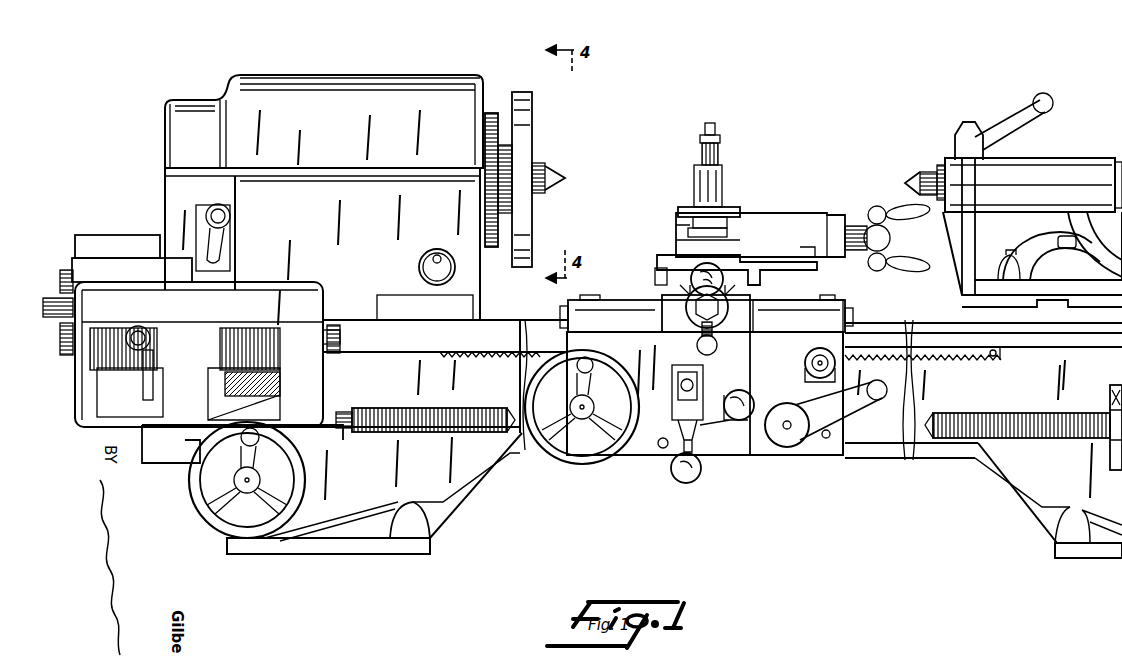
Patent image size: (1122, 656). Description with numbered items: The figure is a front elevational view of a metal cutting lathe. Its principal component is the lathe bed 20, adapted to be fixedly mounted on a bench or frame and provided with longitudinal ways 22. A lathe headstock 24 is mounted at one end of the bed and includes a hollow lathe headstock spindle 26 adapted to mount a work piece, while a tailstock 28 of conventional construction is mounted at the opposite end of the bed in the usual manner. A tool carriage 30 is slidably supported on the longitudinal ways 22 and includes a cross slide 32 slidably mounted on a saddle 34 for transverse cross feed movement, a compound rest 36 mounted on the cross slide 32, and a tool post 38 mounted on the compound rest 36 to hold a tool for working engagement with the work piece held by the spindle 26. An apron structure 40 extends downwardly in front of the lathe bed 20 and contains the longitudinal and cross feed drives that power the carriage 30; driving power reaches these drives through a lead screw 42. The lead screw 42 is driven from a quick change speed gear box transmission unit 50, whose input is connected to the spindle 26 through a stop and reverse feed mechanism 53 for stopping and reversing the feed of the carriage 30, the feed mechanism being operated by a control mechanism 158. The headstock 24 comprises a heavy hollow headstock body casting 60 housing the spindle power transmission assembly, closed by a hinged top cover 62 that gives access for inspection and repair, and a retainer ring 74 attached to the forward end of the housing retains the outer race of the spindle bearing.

The lathe bed 20 is at (491, 471).
The longitudinal ways 22 is at (895, 325).
The lathe headstock 24 is at (435, 72).
The lathe headstock spindle 26 is at (500, 157).
The tailstock 28 is at (1048, 175).
The tool carriage 30 is at (728, 309).
The cross slide 32 is at (660, 277).
The saddle 34 is at (607, 310).
The compound rest 36 is at (785, 230).
The tool post 38 is at (720, 152).
The apron structure 40 is at (650, 446).
The lead screw 42 is at (420, 410).
The quick change speed gear box transmission unit 50 is at (82, 388).
The stop and reverse feed mechanism 53 is at (230, 252).
The headstock body casting 60 is at (358, 202).
The top cover 62 is at (347, 92).
The retainer ring 74 is at (485, 122).
The control mechanism 158 is at (445, 252).